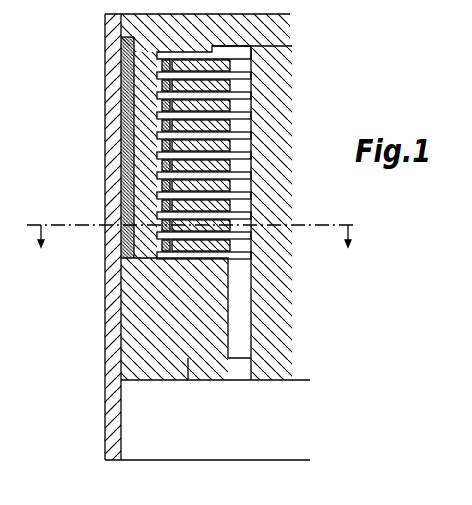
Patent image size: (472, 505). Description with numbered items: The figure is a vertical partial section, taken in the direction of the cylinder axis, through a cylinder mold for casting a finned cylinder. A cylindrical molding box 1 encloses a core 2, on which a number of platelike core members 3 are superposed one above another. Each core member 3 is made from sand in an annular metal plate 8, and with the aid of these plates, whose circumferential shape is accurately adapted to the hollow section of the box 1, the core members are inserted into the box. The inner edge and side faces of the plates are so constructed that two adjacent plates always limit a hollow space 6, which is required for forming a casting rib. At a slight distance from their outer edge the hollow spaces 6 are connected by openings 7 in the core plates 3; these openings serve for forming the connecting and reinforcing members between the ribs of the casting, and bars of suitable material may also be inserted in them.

The cylindrical molding box 1 is at (116, 294).
The core 2 is at (124, 324).
The platelike core members 3 is at (130, 160).
The hollow space 6 is at (232, 116).
The openings 7 is at (128, 139).
The annular metal plate 8 is at (125, 55).